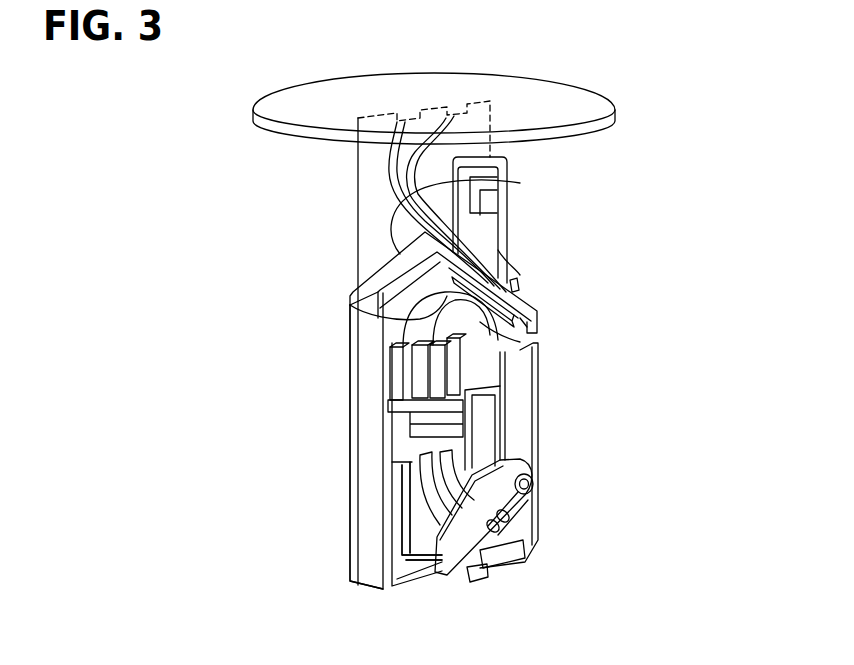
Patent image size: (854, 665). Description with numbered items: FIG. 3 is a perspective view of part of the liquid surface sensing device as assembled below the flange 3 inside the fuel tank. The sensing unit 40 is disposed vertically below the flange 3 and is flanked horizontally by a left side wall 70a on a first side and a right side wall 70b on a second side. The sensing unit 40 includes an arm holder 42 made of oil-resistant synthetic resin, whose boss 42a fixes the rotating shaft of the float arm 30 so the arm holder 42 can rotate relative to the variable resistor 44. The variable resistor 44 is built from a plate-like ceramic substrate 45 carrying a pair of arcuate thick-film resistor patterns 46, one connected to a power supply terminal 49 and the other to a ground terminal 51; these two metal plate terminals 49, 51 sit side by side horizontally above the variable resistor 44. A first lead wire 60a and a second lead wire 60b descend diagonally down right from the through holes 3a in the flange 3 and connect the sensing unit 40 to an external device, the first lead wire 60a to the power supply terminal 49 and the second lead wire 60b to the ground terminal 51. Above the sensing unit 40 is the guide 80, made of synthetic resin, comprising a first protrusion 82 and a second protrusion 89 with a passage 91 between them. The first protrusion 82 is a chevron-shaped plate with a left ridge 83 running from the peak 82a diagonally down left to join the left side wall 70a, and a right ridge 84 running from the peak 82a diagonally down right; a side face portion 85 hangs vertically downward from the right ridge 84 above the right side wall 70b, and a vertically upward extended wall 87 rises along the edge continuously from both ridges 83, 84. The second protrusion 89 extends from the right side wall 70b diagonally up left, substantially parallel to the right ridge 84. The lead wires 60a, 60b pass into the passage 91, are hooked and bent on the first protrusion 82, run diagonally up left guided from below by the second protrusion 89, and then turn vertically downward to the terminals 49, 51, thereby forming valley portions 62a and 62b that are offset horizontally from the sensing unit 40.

The flange 3 is at (282, 97).
The through hole 3a is at (407, 111).
The first lead wire 60a is at (388, 162).
The second lead wire 60b is at (403, 181).
The valley portion 62a is at (348, 303).
The valley portion 62b is at (386, 289).
The first protrusion 82 is at (660, 155).
The left ridge 83 is at (520, 183).
The peak 82a is at (500, 223).
The right ridge 84 is at (497, 252).
The vertically upward extended wall 87 is at (526, 312).
The side face portion 85 is at (537, 330).
The guide 80 is at (720, 217).
The flow passage 91 is at (537, 342).
The second protrusion 89 is at (498, 390).
The sensing unit 40 is at (201, 352).
The boss 42a is at (533, 470).
The arm holder 42 is at (486, 576).
The left side wall 70a is at (368, 556).
The right side wall 70b is at (538, 520).
The float arm 30 is at (500, 560).
The power supply terminal 49 is at (450, 392).
The ground terminal 51 is at (455, 418).
The resistor patterns 46 is at (435, 468).
The variable resistor 44 is at (251, 445).
The substrate 45 is at (420, 527).